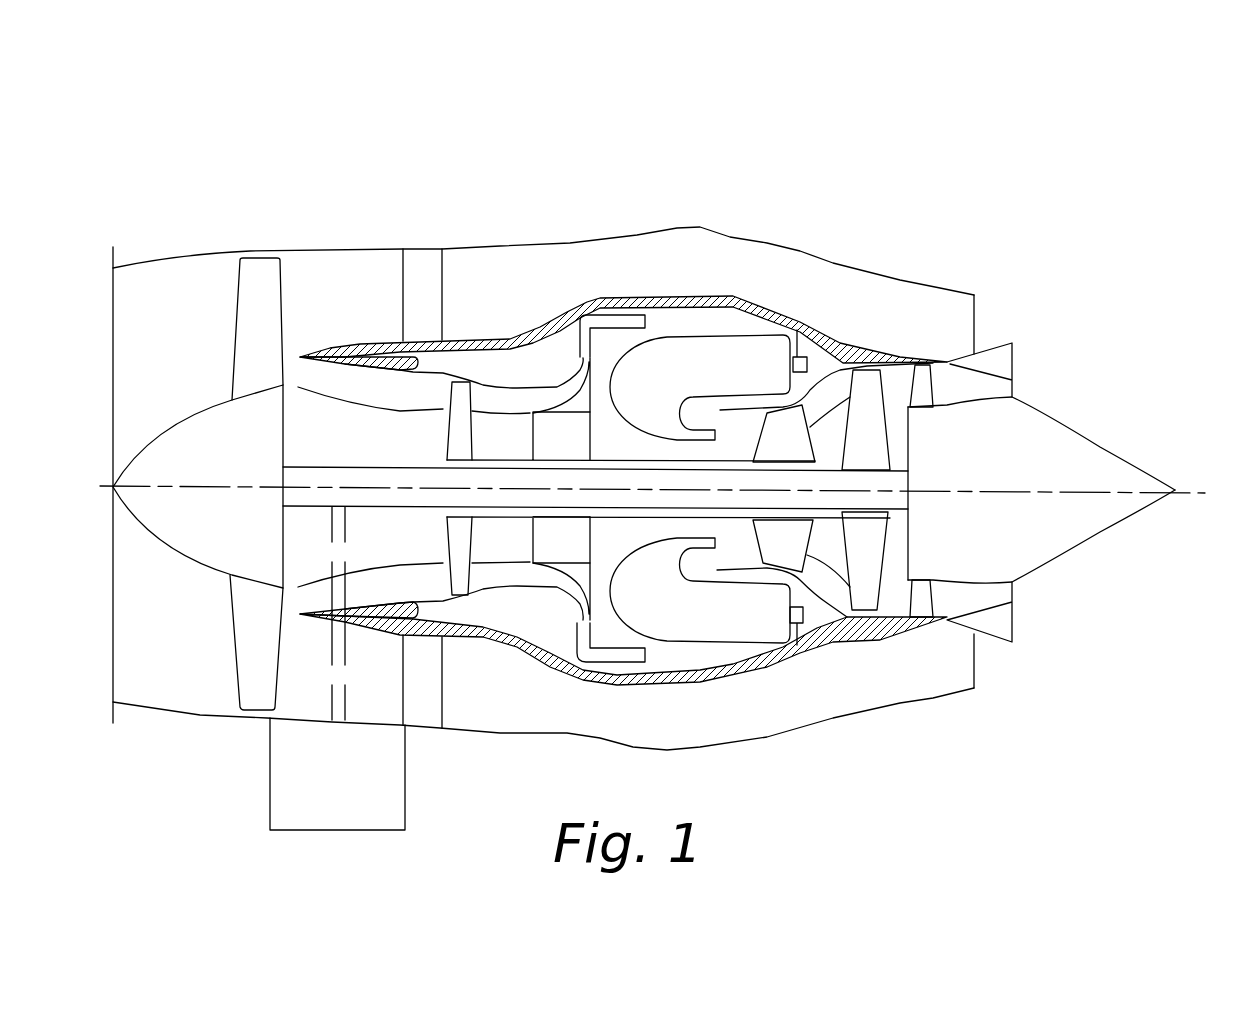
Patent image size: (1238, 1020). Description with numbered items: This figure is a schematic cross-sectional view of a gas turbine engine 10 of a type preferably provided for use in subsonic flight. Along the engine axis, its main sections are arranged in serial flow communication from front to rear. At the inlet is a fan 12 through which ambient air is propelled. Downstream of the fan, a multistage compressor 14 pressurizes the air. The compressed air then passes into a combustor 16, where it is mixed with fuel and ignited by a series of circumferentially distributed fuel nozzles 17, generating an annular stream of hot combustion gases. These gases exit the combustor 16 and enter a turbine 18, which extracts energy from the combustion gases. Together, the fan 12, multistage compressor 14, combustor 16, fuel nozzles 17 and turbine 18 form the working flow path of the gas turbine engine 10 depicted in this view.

The gas turbine engine 10 is at (850, 180).
The fan 12 is at (252, 633).
The multistage compressor 14 is at (518, 403).
The combustor 16 is at (702, 353).
The fuel nozzles 17 is at (807, 358).
The turbine 18 is at (827, 552).